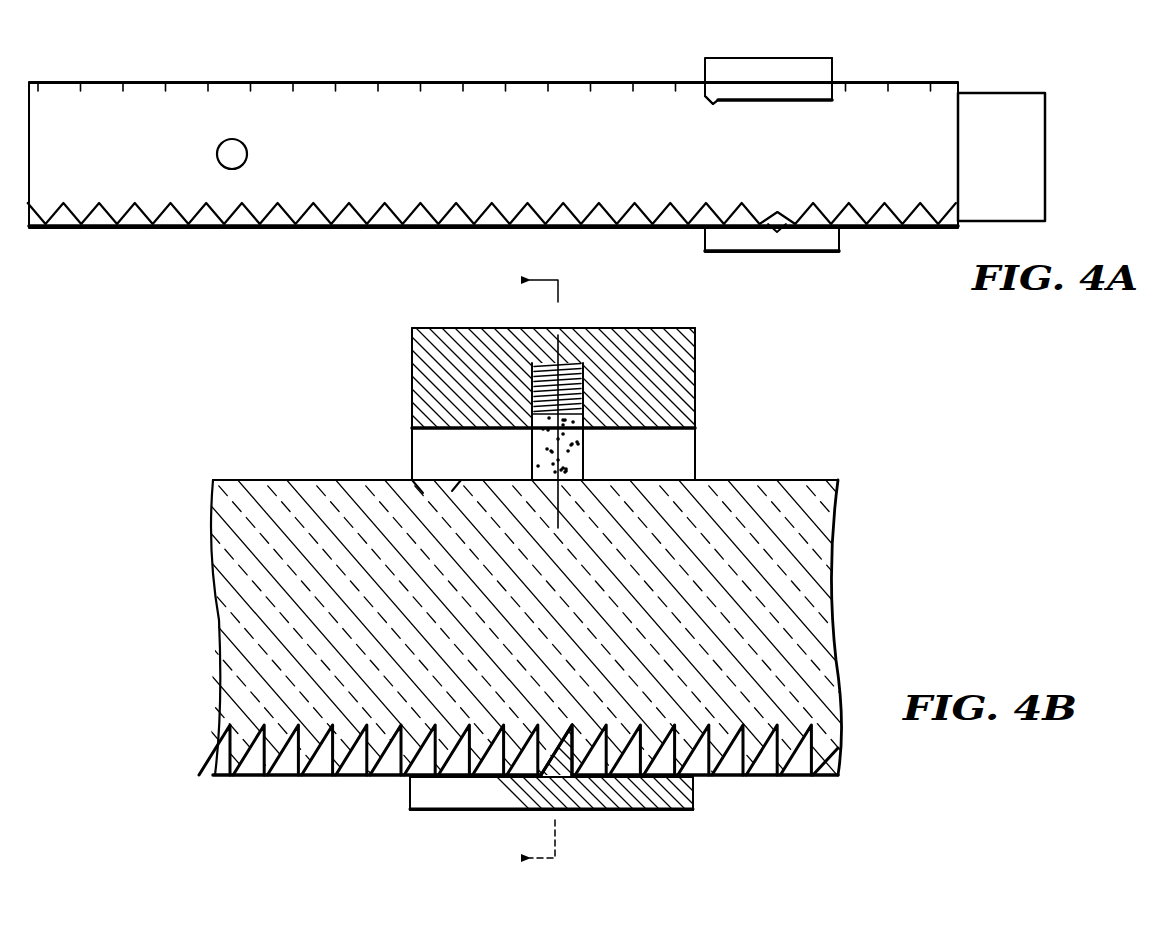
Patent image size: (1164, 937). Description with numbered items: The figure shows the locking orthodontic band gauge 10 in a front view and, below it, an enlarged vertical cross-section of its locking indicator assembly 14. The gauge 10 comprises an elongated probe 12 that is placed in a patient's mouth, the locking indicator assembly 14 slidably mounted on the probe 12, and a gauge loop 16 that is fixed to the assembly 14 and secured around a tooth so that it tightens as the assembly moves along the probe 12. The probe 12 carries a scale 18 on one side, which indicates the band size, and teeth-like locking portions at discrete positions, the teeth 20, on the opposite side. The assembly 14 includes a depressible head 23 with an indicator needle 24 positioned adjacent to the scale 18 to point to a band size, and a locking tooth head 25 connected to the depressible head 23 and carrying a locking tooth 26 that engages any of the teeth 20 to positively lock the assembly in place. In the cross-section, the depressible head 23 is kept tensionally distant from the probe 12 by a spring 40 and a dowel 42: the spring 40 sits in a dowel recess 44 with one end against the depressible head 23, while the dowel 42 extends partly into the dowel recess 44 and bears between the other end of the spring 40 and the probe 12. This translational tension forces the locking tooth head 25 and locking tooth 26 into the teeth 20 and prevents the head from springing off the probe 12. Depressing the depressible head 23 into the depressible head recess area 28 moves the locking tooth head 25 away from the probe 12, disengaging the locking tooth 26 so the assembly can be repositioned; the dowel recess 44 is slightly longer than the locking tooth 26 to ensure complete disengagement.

In FIG. 4A, the locking orthodontic band gauge 10 is at (521, 169).
In FIG. 4B, the locking orthodontic band gauge 10 is at (852, 613).
In FIG. 4A, the probe 12 is at (323, 82).
In FIG. 4B, the probe 12 is at (832, 479).
In FIG. 4A, the locking indicator assembly 14 is at (751, 58).
In FIG. 4B, the locking indicator assembly 14 is at (412, 363).
In FIG. 4A, the gauge loop 16 is at (247, 153).
In FIG. 4A, the scale 18 is at (383, 86).
In FIG. 4A, the teeth 20 is at (306, 226).
In FIG. 4B, the teeth 20 is at (840, 768).
In FIG. 4A, the depressible head 23 is at (833, 74).
In FIG. 4B, the depressible head 23 is at (682, 357).
In FIG. 4A, the indicator needle 24 is at (710, 106).
In FIG. 4B, the indicator needle 24 is at (447, 497).
In FIG. 4A, the locking tooth head 25 is at (830, 253).
In FIG. 4B, the locking tooth head 25 is at (677, 810).
In FIG. 4A, the locking tooth 26 is at (777, 234).
In FIG. 4B, the locking tooth 26 is at (562, 732).
In FIG. 4B, the depressible head recess area 28 is at (687, 447).
In FIG. 4B, the spring 40 is at (573, 360).
In FIG. 4B, the dowel 42 is at (583, 449).
In FIG. 4B, the dowel recess 44 is at (583, 376).